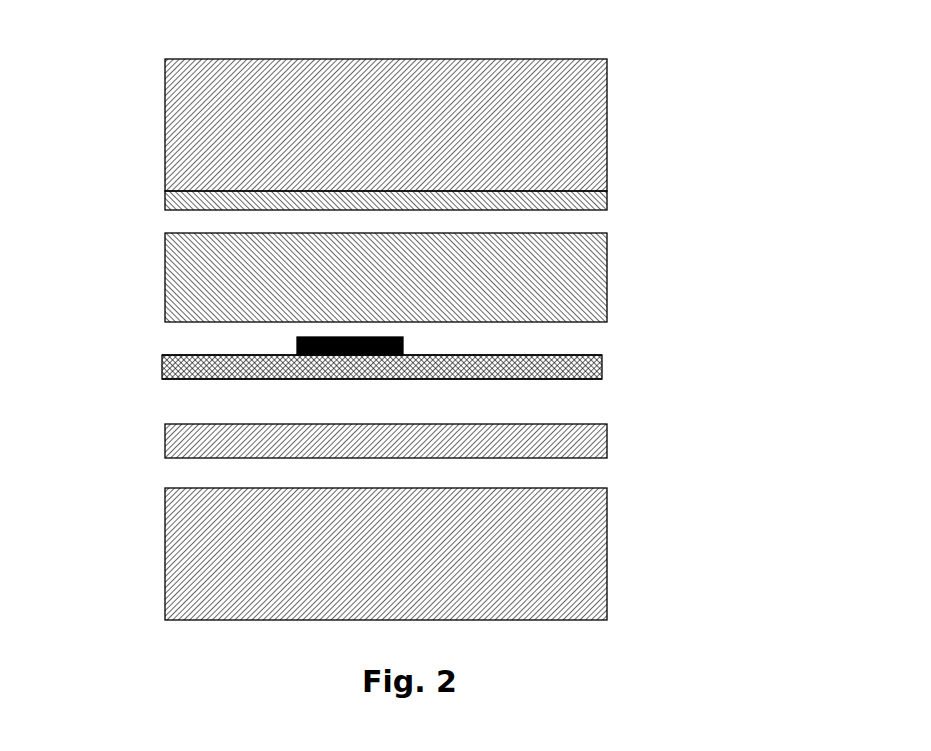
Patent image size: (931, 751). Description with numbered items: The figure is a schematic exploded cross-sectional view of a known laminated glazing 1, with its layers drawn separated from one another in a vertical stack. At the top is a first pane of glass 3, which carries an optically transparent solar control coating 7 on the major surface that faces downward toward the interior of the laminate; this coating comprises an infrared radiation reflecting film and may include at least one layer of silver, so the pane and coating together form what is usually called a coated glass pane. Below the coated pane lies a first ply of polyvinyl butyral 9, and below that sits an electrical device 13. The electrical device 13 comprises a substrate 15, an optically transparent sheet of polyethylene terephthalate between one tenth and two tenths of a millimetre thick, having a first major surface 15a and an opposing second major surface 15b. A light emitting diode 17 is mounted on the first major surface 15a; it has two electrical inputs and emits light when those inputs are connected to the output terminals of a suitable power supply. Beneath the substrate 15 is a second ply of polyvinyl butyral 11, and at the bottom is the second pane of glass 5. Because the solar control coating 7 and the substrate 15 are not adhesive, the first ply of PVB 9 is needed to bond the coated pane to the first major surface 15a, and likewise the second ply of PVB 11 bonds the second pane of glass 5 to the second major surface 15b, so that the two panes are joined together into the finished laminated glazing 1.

The laminated glazing 1 is at (401, 315).
The first pane of glass 3 is at (187, 130).
The second pane of glass 5 is at (187, 557).
The solar control coating 7 is at (603, 198).
The first ply of PVB 9 is at (573, 290).
The second ply of PVB 11 is at (578, 441).
The electrical device 13 is at (383, 397).
The substrate 15 is at (162, 367).
The first major surface 15a is at (573, 352).
The second major surface 15b is at (575, 384).
The light emitting diode 17 is at (297, 350).